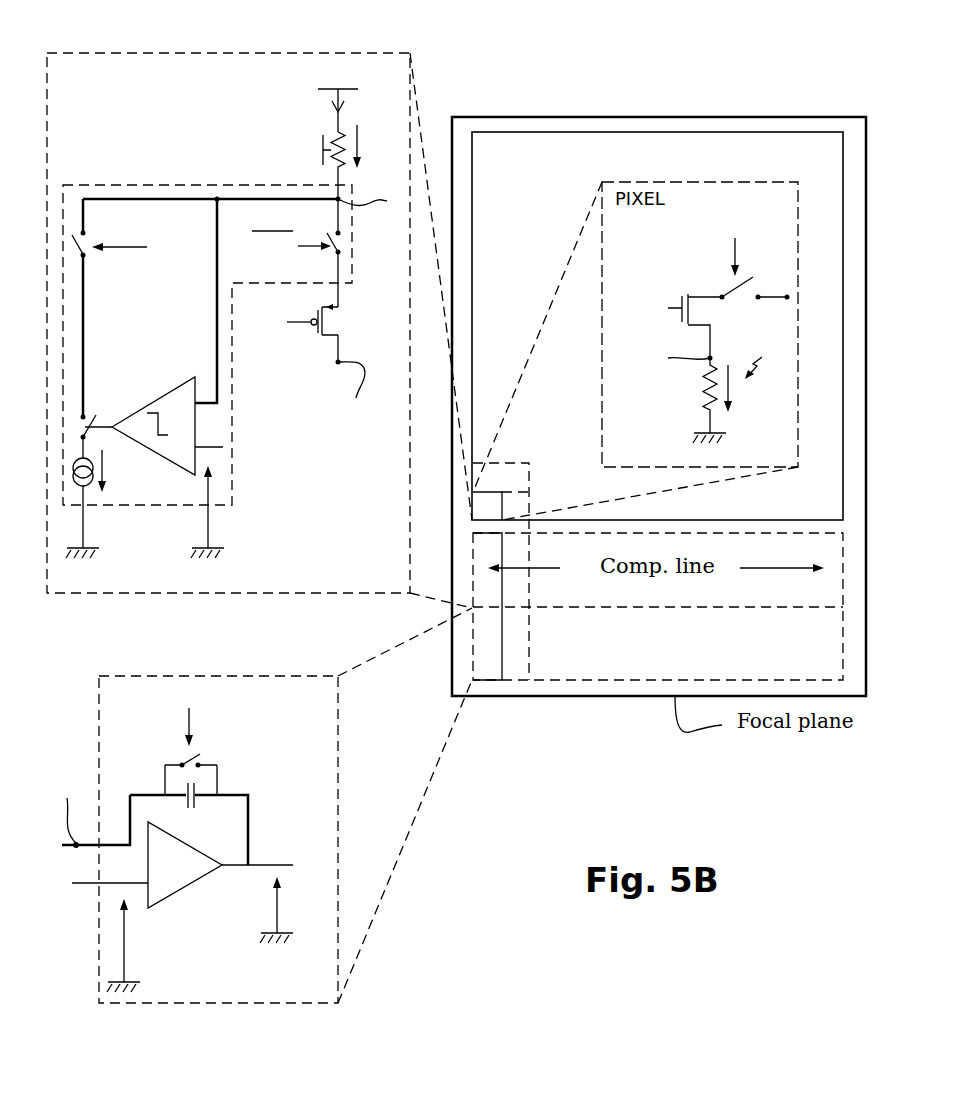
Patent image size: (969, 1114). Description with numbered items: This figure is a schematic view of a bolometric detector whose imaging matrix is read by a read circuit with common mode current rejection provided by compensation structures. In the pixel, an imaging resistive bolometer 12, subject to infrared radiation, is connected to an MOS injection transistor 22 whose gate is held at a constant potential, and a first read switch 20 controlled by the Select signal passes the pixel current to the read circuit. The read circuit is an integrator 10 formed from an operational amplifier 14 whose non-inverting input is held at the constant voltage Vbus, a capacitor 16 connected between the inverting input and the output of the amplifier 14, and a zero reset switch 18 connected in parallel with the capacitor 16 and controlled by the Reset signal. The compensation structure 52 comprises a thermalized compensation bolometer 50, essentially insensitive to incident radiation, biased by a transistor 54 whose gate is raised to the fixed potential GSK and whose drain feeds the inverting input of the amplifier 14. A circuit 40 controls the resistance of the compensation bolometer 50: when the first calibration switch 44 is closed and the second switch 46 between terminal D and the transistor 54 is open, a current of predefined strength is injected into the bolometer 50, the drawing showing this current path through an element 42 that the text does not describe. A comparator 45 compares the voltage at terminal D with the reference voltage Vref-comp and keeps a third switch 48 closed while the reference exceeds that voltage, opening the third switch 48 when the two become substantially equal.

The integrator 10 is at (270, 1003).
The resistive bolometer 12 is at (708, 390).
The operational amplifier 14 is at (195, 882).
The capacitor 16 is at (205, 797).
The zero reset switch 18 is at (210, 762).
The first read switch 20 is at (736, 300).
The MOS injection transistor 22 is at (682, 300).
The circuit 40 is at (227, 185).
The reference current source 42 is at (87, 487).
The first calibration switch 44 is at (85, 235).
The comparator 45 is at (160, 398).
The second switch 46 is at (340, 243).
The third switch 48 is at (83, 418).
The compensation bolometer 50 is at (338, 132).
The compensation structure 52 is at (317, 53).
The polarization transistor 54 is at (330, 336).